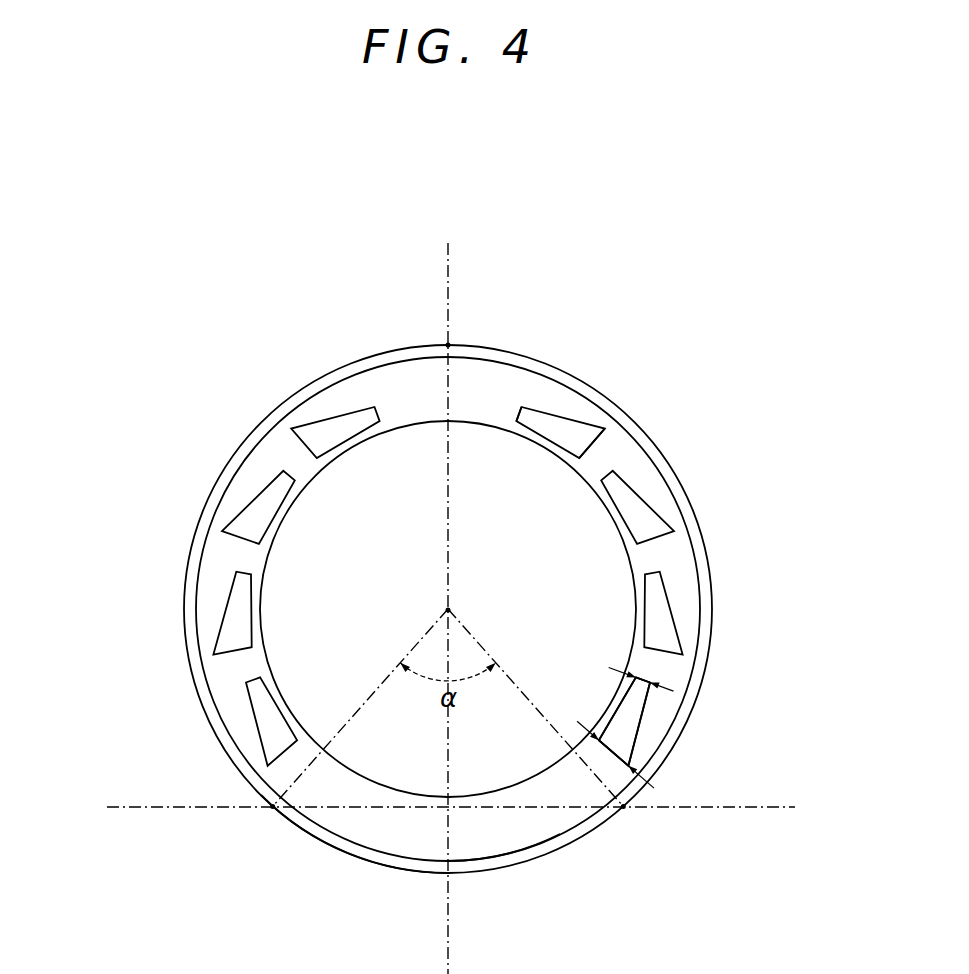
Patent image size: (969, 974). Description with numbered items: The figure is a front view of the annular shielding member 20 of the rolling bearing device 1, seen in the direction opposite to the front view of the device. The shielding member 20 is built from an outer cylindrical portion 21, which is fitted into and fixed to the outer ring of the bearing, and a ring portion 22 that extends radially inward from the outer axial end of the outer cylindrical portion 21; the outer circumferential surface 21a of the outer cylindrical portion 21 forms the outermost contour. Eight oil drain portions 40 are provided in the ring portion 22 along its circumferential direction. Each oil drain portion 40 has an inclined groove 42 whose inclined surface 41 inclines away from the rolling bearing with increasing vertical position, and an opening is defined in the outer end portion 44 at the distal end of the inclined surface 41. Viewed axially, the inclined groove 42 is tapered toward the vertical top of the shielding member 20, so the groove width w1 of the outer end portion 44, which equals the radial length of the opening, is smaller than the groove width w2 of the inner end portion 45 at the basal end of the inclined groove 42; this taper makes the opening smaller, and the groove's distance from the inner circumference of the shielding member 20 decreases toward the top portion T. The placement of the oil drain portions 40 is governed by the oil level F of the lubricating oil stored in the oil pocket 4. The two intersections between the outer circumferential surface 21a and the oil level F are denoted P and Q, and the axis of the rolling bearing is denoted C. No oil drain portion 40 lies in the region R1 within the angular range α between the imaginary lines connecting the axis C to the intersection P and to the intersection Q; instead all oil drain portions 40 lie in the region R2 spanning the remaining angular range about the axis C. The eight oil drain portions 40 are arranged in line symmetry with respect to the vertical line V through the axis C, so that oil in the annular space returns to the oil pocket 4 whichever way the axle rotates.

The rolling bearing device 1 is at (253, 340).
The oil pocket 4 is at (190, 879).
The shielding member 20 is at (257, 430).
The outer cylindrical portion 21 is at (318, 386).
The outer circumferential surface 21a is at (323, 847).
The ring portion 22 is at (220, 548).
The oil drain portion 40 is at (572, 415).
The inclined surface 41 is at (583, 433).
The inclined groove 42 is at (553, 420).
The outer end portion 44 is at (647, 712).
The inner end portion 45 is at (633, 730).
The region R1 is at (392, 850).
The region R2 is at (382, 372).
The axis C is at (454, 607).
The intersection P is at (625, 812).
The intersection Q is at (273, 810).
The top portion T is at (450, 345).
The vertical line V is at (448, 594).
The oil level F is at (150, 805).
The groove width w1 is at (653, 667).
The groove width w2 is at (640, 803).